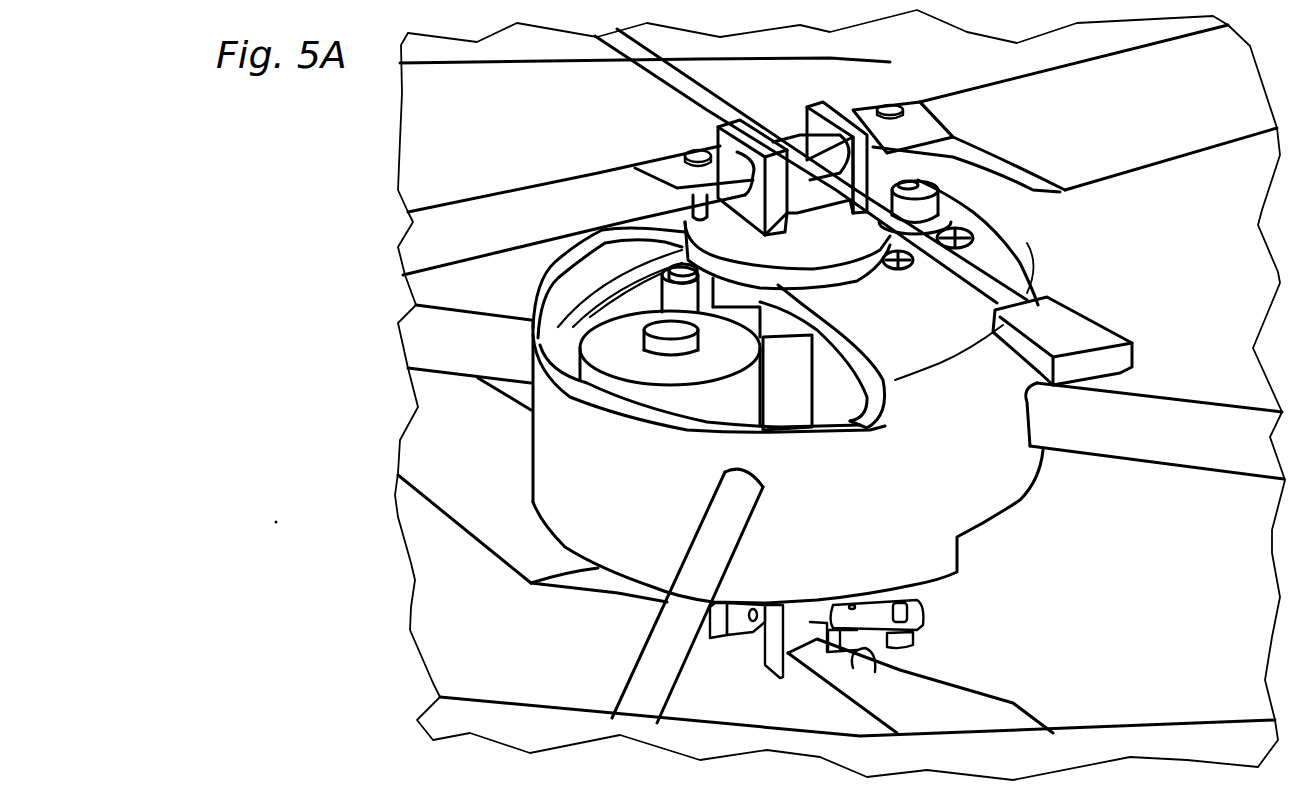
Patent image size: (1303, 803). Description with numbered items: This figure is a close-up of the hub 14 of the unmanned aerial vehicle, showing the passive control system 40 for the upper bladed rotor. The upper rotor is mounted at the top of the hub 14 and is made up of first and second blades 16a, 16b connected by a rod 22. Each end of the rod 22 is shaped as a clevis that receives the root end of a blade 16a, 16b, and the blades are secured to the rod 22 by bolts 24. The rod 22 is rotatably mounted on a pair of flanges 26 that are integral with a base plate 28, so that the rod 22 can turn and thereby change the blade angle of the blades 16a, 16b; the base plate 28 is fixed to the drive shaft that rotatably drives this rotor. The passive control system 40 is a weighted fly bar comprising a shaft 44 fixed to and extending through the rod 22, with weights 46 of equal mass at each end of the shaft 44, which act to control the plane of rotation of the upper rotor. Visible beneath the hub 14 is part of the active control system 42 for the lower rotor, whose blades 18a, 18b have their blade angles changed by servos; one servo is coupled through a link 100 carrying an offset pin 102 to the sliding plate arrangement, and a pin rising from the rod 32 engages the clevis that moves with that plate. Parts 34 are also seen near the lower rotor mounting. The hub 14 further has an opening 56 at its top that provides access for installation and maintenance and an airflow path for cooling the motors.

The hub 14 is at (1000, 480).
The first blade 16a is at (1140, 170).
The second blade 16b is at (490, 180).
The blade of second rotor 18a is at (1030, 708).
The blade of second rotor 18b is at (498, 557).
The rod 22 is at (793, 130).
The bolts 24 is at (697, 150).
The flanges 26 is at (720, 130).
The base plate 28 is at (820, 213).
The rod 32 is at (737, 640).
The bracket 34 is at (713, 638).
The passive control system 40 is at (958, 296).
The active control system 42 is at (947, 603).
The shaft 44 is at (990, 277).
The weights 46 is at (1095, 322).
The opening 56 is at (790, 400).
The link 100 is at (925, 620).
The offset pin 102 is at (917, 640).